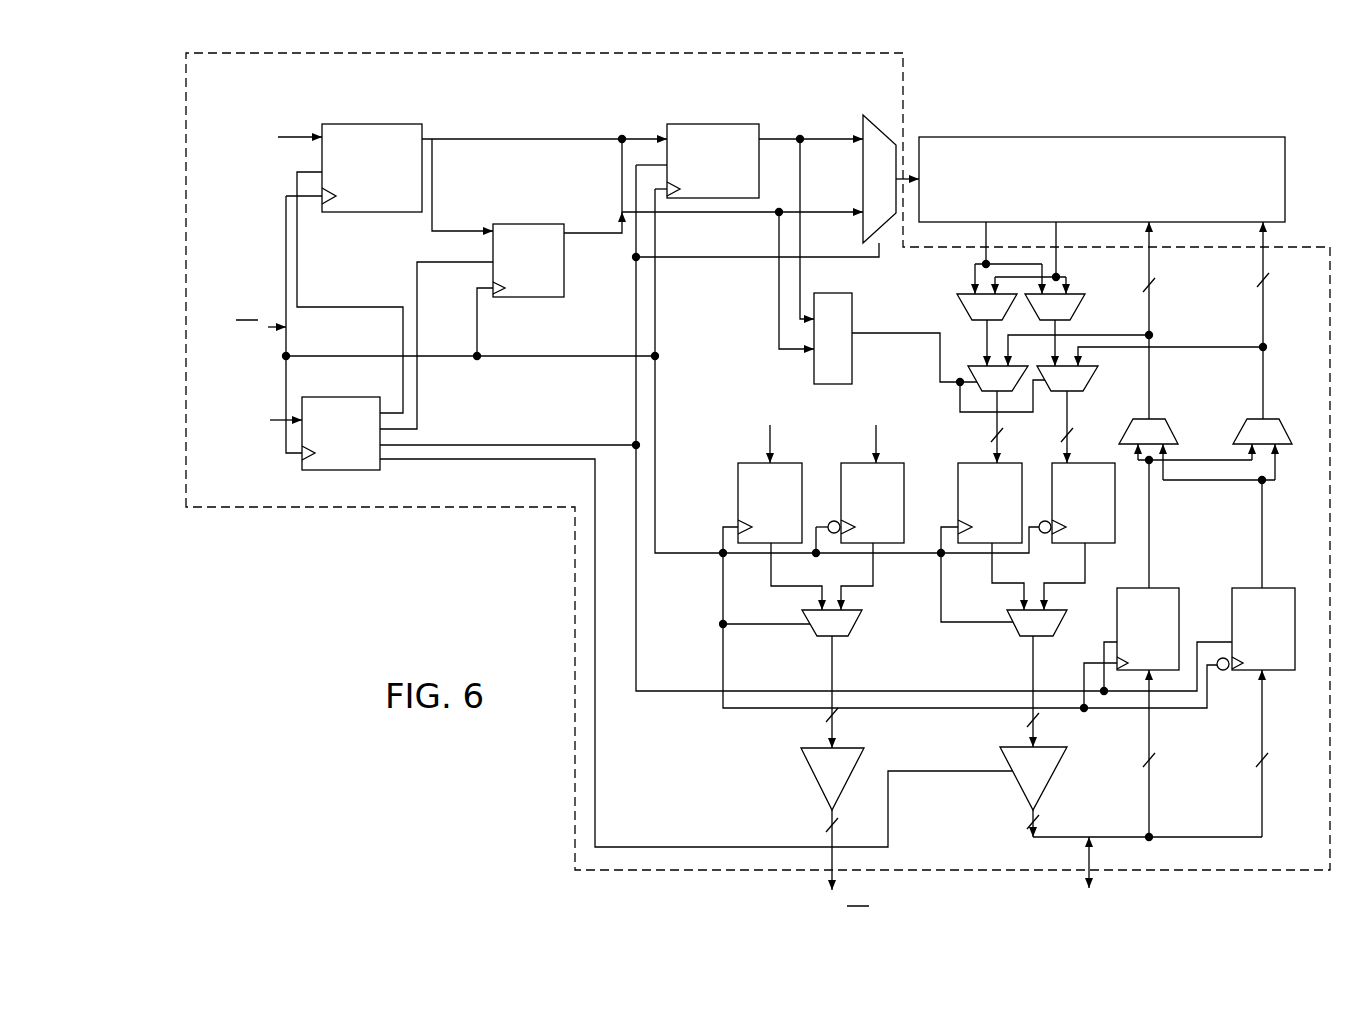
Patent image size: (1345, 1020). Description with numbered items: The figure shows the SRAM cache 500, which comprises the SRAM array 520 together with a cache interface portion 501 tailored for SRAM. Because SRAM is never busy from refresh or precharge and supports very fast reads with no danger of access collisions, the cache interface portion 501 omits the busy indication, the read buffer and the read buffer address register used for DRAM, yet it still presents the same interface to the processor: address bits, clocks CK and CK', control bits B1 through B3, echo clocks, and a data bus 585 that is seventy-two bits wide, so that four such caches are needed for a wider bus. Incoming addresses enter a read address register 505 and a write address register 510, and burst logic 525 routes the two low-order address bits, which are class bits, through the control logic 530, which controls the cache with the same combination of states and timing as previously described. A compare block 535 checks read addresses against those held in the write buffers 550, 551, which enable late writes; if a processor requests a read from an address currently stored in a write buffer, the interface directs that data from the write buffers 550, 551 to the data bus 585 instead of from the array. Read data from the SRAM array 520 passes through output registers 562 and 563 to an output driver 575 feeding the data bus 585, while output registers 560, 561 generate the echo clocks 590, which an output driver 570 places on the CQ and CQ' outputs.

The SRAM cache 500 is at (1133, 115).
The cache interface portion 501 is at (395, 507).
The read address register 505 is at (358, 124).
The write address register 510 is at (702, 124).
The SRAM array 520 is at (1002, 137).
The burst logic 525 is at (532, 224).
The control logic 530 is at (350, 397).
The compare block 535 is at (852, 302).
The write buffer 550 is at (1158, 588).
The write buffer 551 is at (1270, 588).
The output register 560 is at (738, 486).
The output register 561 is at (862, 463).
The output register 562 is at (970, 463).
The output register 563 is at (1050, 468).
The output driver 570 is at (858, 748).
The output driver 575 is at (1087, 752).
The data bus 585 is at (1087, 860).
The echo clocks 590 is at (830, 857).